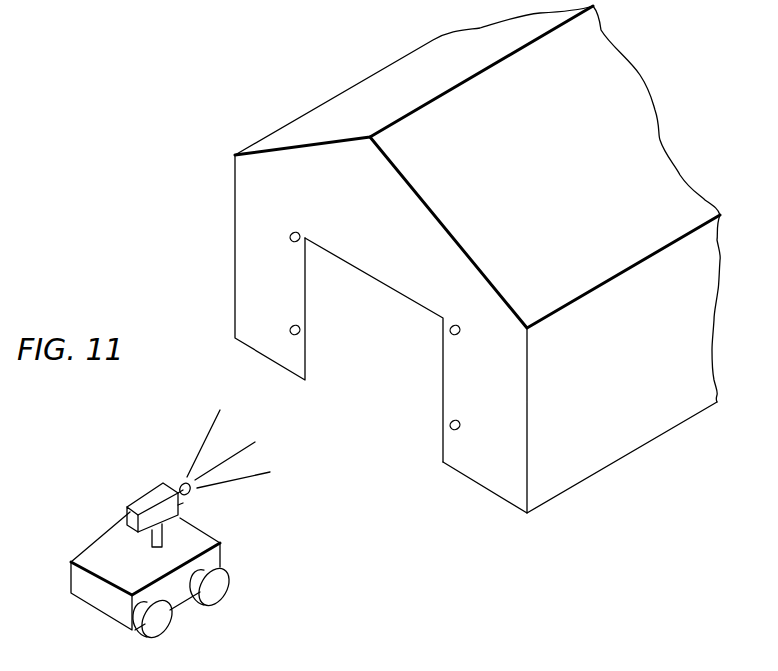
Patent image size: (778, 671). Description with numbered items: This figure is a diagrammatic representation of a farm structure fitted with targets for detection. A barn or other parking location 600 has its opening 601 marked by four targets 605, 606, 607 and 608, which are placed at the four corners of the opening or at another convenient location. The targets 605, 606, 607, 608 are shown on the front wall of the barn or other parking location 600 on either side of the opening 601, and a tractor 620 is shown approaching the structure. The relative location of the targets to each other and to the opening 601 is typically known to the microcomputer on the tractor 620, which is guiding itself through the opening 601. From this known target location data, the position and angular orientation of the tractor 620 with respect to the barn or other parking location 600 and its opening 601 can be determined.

The barn or other parking location 600 is at (277, 148).
The opening 601 is at (392, 349).
The target 605 is at (291, 232).
The target 606 is at (291, 326).
The target 607 is at (459, 332).
The target 608 is at (460, 426).
The tractor 620 is at (97, 553).